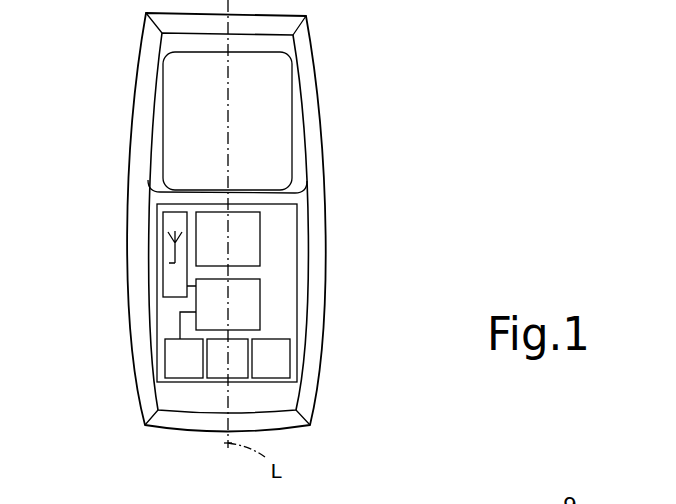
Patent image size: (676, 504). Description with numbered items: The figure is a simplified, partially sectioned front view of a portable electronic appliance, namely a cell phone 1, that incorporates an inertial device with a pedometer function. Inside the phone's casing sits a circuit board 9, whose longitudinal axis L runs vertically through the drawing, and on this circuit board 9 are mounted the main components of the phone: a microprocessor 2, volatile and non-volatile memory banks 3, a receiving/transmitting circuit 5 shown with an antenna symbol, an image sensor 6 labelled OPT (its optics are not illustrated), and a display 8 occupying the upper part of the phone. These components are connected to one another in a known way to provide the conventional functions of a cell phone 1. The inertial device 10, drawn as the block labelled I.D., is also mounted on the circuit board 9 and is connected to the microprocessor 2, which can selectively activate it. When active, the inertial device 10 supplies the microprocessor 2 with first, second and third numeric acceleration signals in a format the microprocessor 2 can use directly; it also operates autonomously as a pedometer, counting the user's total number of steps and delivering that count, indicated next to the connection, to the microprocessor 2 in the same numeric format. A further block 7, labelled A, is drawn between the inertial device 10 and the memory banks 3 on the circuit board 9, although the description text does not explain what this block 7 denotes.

The cell phone 1 is at (427, 151).
The microprocessor 2 is at (253, 305).
The volatile and not volatile memory banks 3 is at (280, 370).
The receiving/transmitting circuit 5 is at (168, 255).
The image sensor 6 is at (260, 233).
The application unit 7 is at (217, 377).
The display 8 is at (180, 103).
The circuit board 9 is at (288, 268).
The inertial device 10 is at (167, 372).